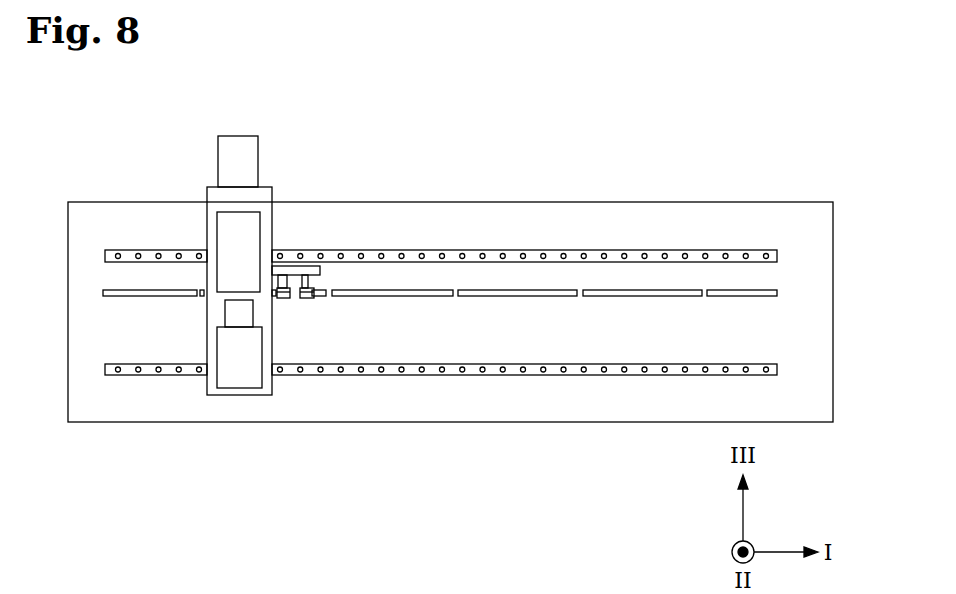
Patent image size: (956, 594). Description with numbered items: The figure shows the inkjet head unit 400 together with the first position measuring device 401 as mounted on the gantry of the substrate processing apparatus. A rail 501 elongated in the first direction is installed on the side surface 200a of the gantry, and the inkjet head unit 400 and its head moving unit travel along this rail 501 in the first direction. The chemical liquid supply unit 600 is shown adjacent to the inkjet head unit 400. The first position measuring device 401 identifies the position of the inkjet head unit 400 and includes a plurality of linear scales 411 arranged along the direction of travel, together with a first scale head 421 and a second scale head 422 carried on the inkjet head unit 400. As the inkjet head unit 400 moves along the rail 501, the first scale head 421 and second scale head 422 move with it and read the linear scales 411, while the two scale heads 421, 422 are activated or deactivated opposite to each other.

The side surface of the gantry 200a is at (797, 202).
The rail 501 is at (697, 250).
The linear scales 411 is at (559, 275).
The chemical liquid supply unit 600 is at (207, 209).
The inkjet head unit 400 is at (238, 409).
The first position measuring device 401 is at (312, 251).
The second scale head 422 is at (283, 298).
The first scale head 421 is at (307, 298).